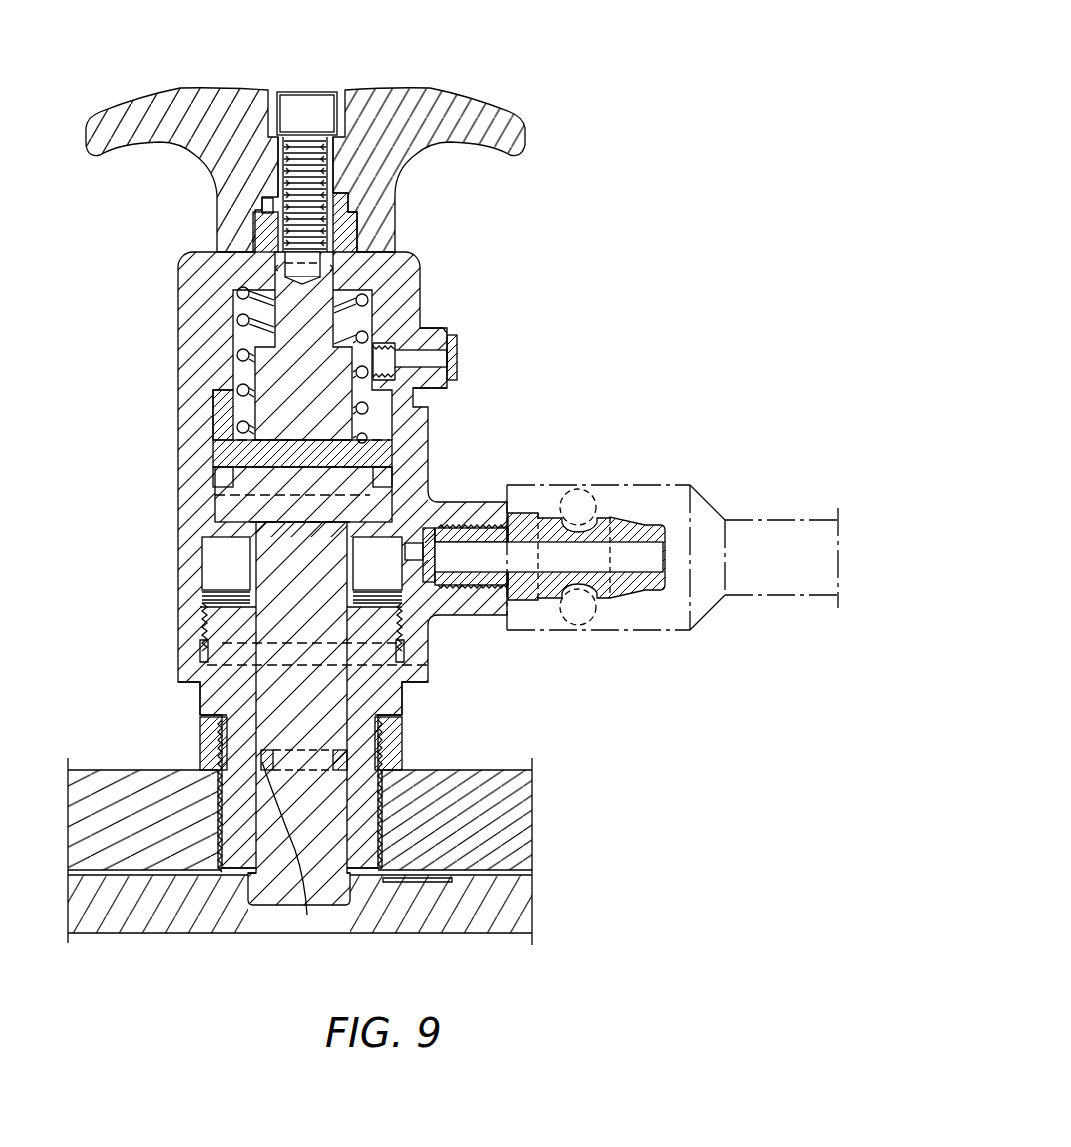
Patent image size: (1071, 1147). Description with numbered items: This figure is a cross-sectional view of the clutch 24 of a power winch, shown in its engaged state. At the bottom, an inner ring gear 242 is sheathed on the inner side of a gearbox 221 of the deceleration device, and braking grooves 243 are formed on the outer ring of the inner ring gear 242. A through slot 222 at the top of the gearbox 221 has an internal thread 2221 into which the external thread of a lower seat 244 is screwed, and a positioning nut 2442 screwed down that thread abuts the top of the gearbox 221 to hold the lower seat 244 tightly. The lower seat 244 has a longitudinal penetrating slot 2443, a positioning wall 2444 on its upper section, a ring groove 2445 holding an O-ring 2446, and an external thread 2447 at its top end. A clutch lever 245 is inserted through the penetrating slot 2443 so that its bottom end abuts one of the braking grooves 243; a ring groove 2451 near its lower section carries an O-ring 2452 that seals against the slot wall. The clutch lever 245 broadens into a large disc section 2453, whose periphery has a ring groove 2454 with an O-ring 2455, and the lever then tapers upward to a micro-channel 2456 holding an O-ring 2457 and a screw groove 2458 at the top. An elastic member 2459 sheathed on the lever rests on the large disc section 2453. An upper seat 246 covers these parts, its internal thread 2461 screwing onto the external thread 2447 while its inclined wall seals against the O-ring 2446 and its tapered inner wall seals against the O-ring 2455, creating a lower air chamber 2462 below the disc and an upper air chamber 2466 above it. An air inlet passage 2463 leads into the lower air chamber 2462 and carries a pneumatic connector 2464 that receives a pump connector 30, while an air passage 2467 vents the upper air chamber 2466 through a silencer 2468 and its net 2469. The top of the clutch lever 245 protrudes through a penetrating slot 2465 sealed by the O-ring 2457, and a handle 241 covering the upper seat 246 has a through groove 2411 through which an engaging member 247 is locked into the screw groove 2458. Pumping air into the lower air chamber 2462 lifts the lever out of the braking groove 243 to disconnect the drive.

The clutch 24 is at (512, 228).
The handle 241 is at (223, 113).
The through groove 2411 is at (282, 162).
The engaging member 247 is at (300, 113).
The screw groove 2458 is at (315, 180).
The penetrating slot 2465 is at (260, 207).
The O-ring 2457 is at (355, 250).
The micro-channel 2456 is at (330, 267).
The elastic member 2459 is at (365, 330).
The air passage 2467 is at (392, 347).
The silencer 2468 is at (435, 340).
The net 2469 is at (458, 348).
The clutch lever 245 is at (457, 373).
The upper seat 246 is at (203, 312).
The upper air chamber 2466 is at (233, 413).
The large disc section 2453 is at (320, 387).
The O-ring 2455 is at (370, 448).
The ring groove 2454 is at (383, 475).
The lower air chamber 2462 is at (393, 548).
The air inlet passage 2463 is at (493, 555).
The pneumatic connector 2464 is at (623, 530).
The pump connector 30 is at (703, 525).
The external thread 2447 is at (200, 613).
The internal thread 2461 is at (377, 563).
The ring groove 2445 is at (200, 637).
The O-ring 2446 is at (208, 653).
The positioning wall 2444 is at (190, 668).
The lower seat 244 is at (223, 693).
The positioning nut 2442 is at (207, 738).
The penetrating slot 2443 is at (330, 703).
The through slot 222 is at (360, 812).
The internal thread 2221 is at (383, 832).
The gearbox 221 is at (500, 830).
The braking groove 243 is at (248, 907).
The ring groove 2451 is at (307, 915).
The O-ring 2452 is at (263, 772).
The inner ring gear 242 is at (487, 913).